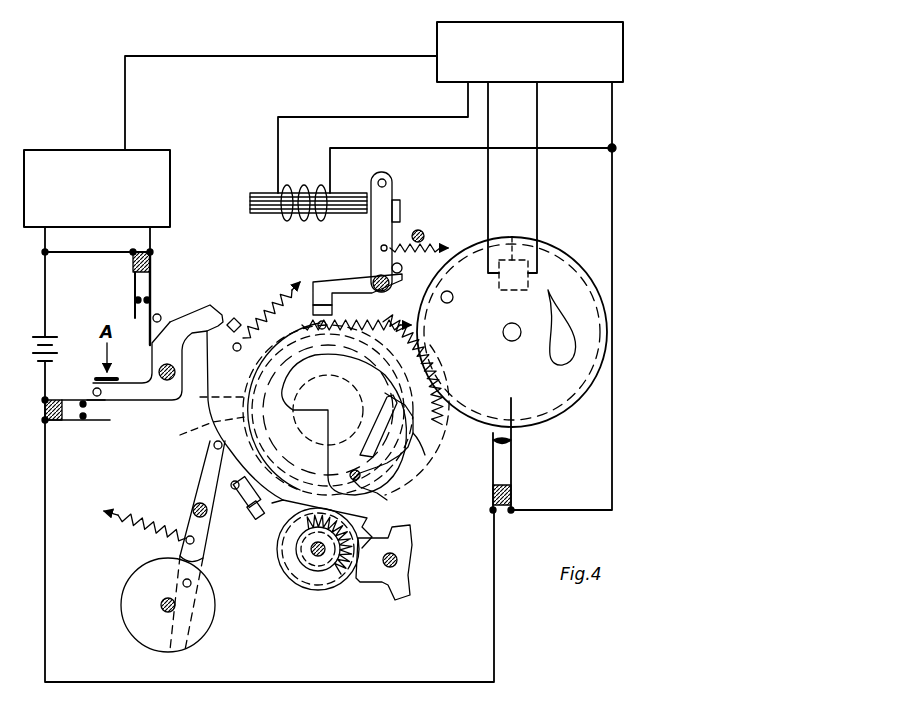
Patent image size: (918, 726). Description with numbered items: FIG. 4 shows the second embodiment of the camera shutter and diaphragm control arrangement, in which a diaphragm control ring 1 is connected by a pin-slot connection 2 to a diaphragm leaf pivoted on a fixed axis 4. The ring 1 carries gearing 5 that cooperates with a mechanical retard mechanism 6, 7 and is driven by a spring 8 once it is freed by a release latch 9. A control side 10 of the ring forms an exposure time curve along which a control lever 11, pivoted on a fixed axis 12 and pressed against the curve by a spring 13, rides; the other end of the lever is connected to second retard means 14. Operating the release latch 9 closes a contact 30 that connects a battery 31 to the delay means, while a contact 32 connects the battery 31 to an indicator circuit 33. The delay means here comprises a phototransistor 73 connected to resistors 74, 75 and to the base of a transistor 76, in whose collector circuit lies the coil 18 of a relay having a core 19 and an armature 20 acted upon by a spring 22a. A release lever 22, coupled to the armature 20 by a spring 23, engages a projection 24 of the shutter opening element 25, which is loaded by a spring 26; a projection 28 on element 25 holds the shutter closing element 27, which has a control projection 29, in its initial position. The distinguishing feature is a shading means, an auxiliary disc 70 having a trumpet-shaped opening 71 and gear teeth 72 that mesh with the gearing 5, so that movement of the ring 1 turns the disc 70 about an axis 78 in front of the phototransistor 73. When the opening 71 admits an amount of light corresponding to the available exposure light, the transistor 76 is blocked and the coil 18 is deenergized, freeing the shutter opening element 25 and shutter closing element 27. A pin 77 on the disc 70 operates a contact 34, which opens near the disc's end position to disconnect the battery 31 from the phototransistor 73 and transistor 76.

The diaphragm control ring 1 is at (412, 468).
The pin-slot connection 2 is at (430, 422).
The fixed axis 4 is at (388, 500).
The gearing 5 is at (428, 462).
The mechanical retard mechanism 6 is at (330, 580).
The mechanical retard mechanism 7 is at (405, 575).
The spring 8 is at (256, 316).
The release latch 9 is at (168, 335).
The control side 10 is at (212, 450).
The control lever 11 is at (188, 536).
The fixed axis 12 is at (198, 505).
The spring 13 is at (125, 524).
The second retard means 14 is at (205, 620).
The coil 18 is at (293, 202).
The core 19 is at (262, 192).
The armature 20 is at (374, 226).
The release lever 22 is at (352, 282).
The spring 22a is at (438, 246).
The spring 23 is at (398, 275).
The projection 24 is at (298, 280).
The shutter opening element 25 is at (180, 434).
The spring 26 is at (312, 324).
The shutter closing element 27 is at (210, 408).
The projection 28 is at (245, 495).
The control projection 29 is at (258, 522).
The contact 30 is at (100, 420).
The battery 31 is at (30, 340).
The contact 32 is at (135, 293).
The indicator circuit 33 is at (165, 155).
The contact 34 is at (500, 450).
The auxiliary disc 70 is at (512, 336).
The trumpet-shaped opening 71 is at (562, 333).
The gear teeth 72 is at (572, 416).
The phototransistor 73 is at (512, 250).
The resistor 74 is at (478, 52).
The resistor 75 is at (478, 52).
The transistor 76 is at (437, 42).
The pin 77 is at (450, 303).
The axis 78 is at (515, 341).